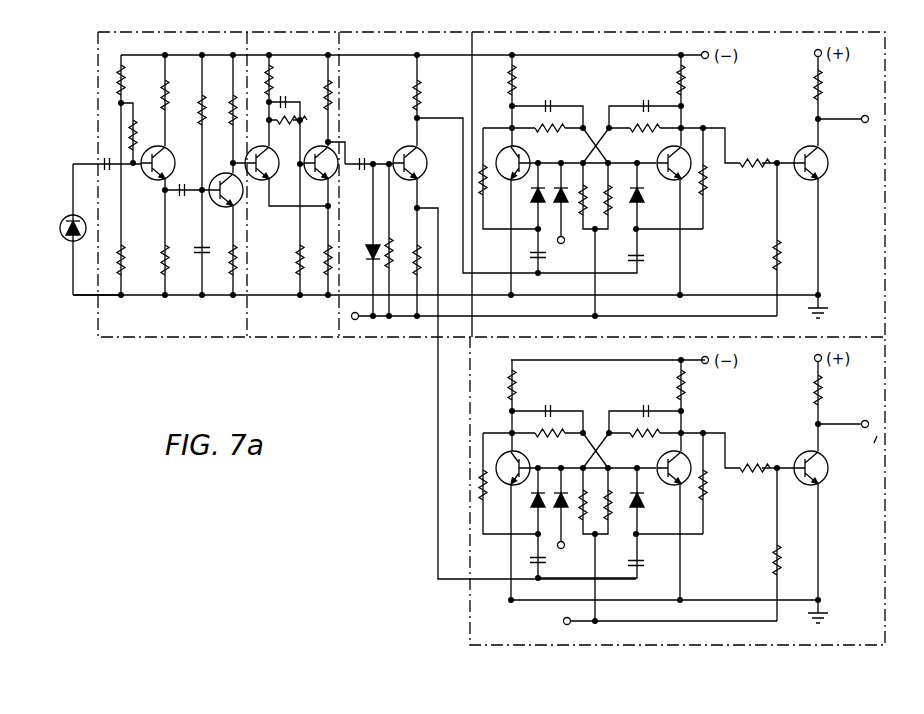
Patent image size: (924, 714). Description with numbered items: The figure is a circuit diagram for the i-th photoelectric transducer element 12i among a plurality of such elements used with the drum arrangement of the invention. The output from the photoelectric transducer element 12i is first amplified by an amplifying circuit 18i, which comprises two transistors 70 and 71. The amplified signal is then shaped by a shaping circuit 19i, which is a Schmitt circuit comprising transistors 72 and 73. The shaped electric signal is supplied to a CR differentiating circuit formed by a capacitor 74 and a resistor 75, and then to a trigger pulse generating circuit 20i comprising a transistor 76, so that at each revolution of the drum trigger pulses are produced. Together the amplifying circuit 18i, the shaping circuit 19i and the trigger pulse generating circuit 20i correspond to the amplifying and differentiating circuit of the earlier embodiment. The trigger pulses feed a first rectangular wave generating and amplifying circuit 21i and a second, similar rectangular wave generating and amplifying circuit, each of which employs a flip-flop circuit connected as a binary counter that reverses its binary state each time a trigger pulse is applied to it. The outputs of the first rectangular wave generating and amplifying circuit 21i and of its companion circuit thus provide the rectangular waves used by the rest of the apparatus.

The photoelectric transducer element 12i is at (66, 240).
The amplifying circuit 18i is at (175, 150).
The shaping circuit 19i is at (295, 150).
The trigger pulse generating circuit 20i is at (487, 290).
The first rectangular wave generating and amplifying circuit 21i is at (595, 5).
The transistor 70 is at (160, 148).
The transistor 71 is at (218, 173).
The transistor 72 is at (275, 177).
The transistor 73 is at (318, 179).
The capacitor 74 is at (362, 157).
The resistor 75 is at (393, 250).
The transistor 76 is at (419, 153).